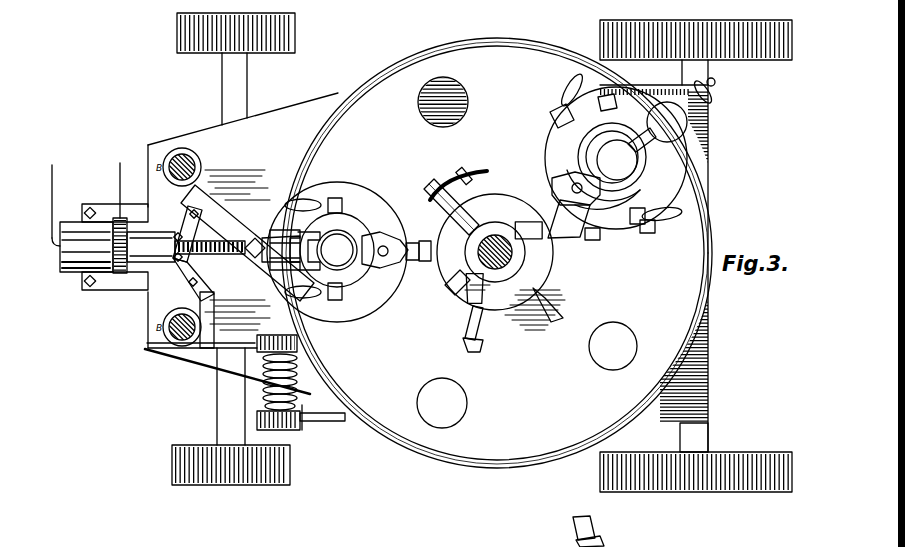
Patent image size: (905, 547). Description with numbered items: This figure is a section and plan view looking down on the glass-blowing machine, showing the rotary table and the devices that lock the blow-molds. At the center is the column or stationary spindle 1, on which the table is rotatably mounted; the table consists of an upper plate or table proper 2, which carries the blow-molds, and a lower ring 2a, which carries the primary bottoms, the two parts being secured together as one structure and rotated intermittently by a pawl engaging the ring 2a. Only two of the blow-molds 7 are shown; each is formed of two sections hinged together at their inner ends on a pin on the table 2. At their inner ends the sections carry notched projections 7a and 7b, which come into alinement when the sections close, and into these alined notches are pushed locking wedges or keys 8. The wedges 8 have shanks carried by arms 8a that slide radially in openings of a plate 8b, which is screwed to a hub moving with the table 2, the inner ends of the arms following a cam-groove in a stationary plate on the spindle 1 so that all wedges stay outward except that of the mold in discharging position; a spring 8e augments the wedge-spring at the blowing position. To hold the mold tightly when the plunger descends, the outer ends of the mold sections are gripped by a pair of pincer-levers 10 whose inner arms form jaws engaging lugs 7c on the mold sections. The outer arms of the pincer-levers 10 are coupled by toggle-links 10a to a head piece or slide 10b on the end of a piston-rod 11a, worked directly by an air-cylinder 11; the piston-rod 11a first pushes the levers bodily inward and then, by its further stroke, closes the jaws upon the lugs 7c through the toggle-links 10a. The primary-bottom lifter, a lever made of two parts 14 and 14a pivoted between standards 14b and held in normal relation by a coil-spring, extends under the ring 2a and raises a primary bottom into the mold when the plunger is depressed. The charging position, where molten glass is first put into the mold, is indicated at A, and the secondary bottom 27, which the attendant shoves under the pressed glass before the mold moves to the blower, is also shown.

The column or stationary spindle 1 is at (500, 273).
The upper plate or table proper 2 is at (558, 438).
The ring 2a is at (535, 458).
The blow-mold 7 is at (352, 228).
The notched projection 7a is at (562, 180).
The notched projection 7b is at (575, 213).
The lug 7c is at (330, 200).
The locking wedge or key 8 is at (457, 342).
The arm 8a is at (612, 546).
The plate 8b is at (452, 273).
The spring 8e is at (483, 170).
The pincer-lever 10 is at (224, 225).
The toggle-link 10a is at (118, 325).
The head piece or slide 10b is at (152, 262).
The air-cylinder 11 is at (72, 265).
The piston-rod 11a is at (130, 282).
The lever part 14 is at (325, 418).
The lever part 14a is at (207, 345).
The standard 14b is at (300, 432).
The secondary bottom 27 is at (675, 122).
The charging position A is at (440, 418).